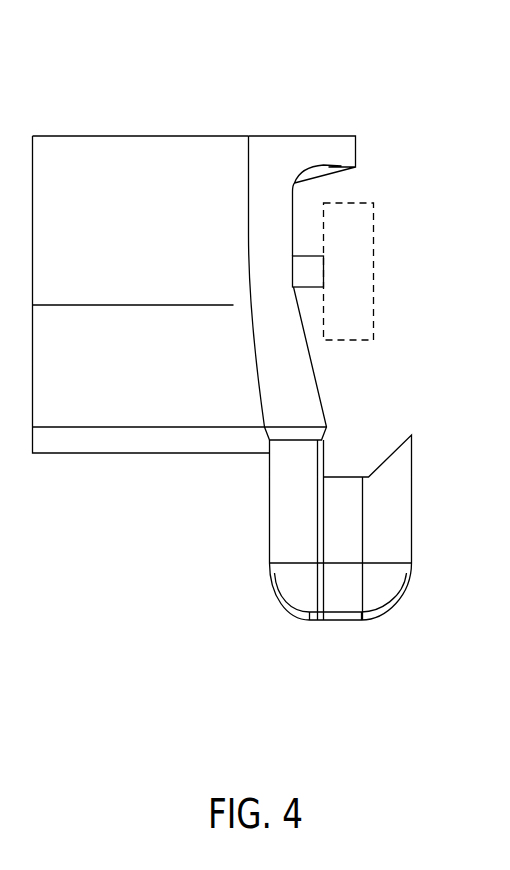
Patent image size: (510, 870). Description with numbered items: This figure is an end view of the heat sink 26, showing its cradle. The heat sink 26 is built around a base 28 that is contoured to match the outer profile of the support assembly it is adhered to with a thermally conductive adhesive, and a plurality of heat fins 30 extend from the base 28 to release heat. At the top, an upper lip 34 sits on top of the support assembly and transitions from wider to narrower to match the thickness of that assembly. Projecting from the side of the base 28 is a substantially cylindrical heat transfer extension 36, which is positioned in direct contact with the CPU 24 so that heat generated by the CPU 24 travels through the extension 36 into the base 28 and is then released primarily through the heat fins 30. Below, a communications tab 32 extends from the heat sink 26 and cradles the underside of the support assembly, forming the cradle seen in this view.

The CPU 24 is at (375, 260).
The heat sink 26 is at (372, 91).
The base 28 is at (302, 400).
The heat fins 30 is at (208, 147).
The communications tab 32 is at (437, 512).
The upper lip 34 is at (295, 147).
The heat transfer extension 36 is at (303, 241).